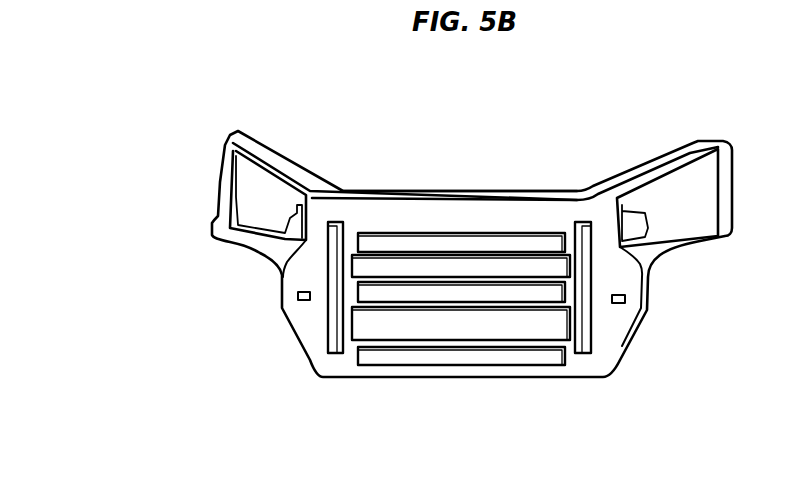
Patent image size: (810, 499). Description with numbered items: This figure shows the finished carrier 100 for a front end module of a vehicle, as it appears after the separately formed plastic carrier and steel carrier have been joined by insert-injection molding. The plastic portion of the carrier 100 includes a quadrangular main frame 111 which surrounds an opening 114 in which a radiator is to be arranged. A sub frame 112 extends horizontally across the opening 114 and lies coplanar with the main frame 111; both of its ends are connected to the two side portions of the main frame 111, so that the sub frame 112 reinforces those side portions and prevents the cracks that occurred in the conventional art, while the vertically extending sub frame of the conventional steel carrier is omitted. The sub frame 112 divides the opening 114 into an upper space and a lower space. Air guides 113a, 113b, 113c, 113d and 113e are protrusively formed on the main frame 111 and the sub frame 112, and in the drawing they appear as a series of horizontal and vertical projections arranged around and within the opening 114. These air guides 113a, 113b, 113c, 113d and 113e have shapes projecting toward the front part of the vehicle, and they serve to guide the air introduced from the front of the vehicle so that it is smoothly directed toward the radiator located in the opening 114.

The carrier 100 is at (578, 160).
The main frame 111 is at (517, 223).
The sub frame 112 is at (382, 277).
The air guide 113a is at (428, 242).
The air guide 113b is at (363, 298).
The air guide 113c is at (493, 357).
The air guide 113d is at (334, 267).
The air guide 113e is at (580, 275).
The opening 114 is at (410, 330).